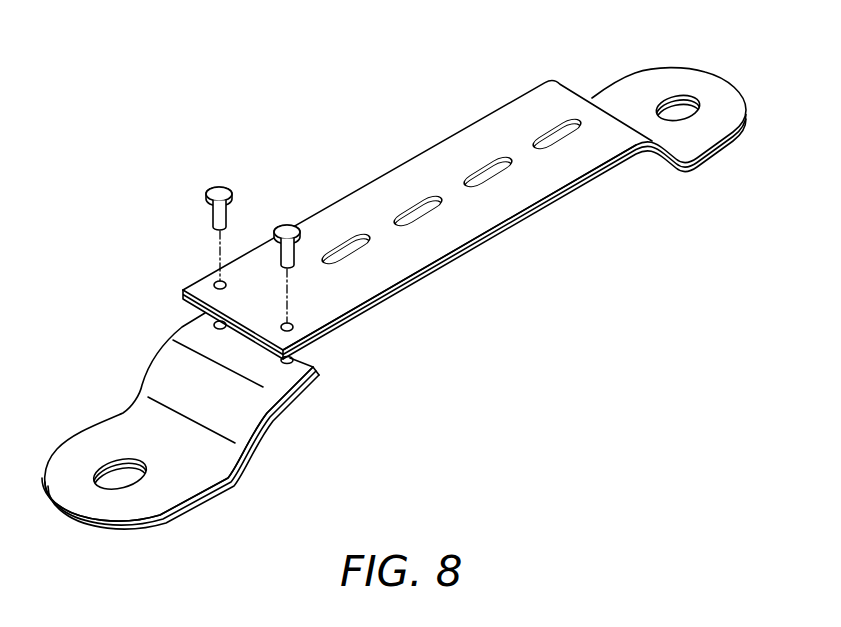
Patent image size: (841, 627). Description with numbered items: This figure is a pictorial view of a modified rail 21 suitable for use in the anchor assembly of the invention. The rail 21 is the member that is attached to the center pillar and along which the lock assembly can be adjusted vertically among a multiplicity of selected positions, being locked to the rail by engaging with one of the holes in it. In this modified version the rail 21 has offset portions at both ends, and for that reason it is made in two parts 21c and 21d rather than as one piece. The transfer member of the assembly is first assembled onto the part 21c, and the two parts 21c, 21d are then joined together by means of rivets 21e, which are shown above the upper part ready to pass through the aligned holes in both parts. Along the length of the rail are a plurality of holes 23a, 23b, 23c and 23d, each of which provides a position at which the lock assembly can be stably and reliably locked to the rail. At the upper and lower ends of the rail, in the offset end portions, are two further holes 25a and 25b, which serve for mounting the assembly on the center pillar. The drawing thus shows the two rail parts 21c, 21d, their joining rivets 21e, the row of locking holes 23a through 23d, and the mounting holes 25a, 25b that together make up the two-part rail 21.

The rail 21 is at (394, 265).
The rail part 21c is at (424, 226).
The rail part 21d is at (394, 265).
The rivets 21e is at (289, 229).
The hole 23a is at (570, 133).
The hole 23b is at (488, 167).
The hole 23c is at (420, 205).
The hole 23d is at (353, 245).
The hole 25a is at (675, 108).
The hole 25b is at (123, 473).